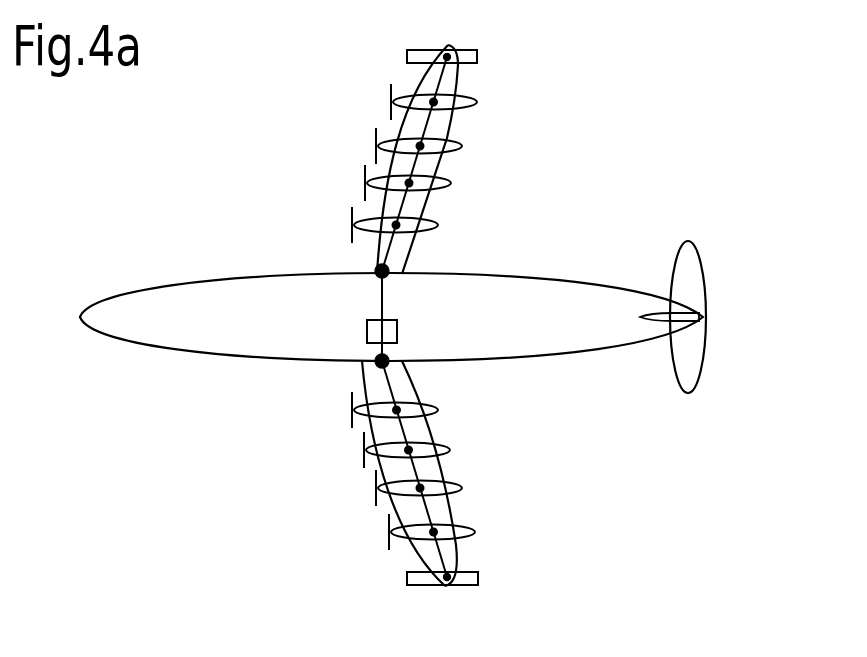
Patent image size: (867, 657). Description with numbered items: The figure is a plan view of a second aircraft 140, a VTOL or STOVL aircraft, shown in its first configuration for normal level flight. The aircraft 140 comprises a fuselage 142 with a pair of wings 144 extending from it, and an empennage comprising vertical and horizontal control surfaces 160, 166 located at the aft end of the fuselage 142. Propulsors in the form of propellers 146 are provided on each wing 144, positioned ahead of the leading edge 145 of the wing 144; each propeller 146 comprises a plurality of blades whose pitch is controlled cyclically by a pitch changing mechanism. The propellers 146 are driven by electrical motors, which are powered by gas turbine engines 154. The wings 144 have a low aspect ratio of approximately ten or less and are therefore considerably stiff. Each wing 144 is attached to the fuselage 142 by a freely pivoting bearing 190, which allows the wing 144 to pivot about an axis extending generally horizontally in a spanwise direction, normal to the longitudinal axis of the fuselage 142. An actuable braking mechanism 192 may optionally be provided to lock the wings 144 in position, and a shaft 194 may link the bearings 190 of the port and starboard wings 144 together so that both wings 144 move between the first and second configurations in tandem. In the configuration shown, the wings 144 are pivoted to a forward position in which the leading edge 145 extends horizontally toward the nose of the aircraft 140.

The second aircraft 140 is at (170, 193).
The fuselage 142 is at (511, 273).
The wing 144 is at (452, 131).
The leading edge 145 is at (392, 504).
The propeller 146 is at (380, 412).
The gas turbine engine 154 is at (443, 49).
The vertical control surface 160 is at (704, 313).
The horizontal control surface 166 is at (701, 264).
The freely pivoting bearing 190 is at (376, 267).
The actuable braking mechanism 192 is at (363, 334).
The shaft 194 is at (385, 300).